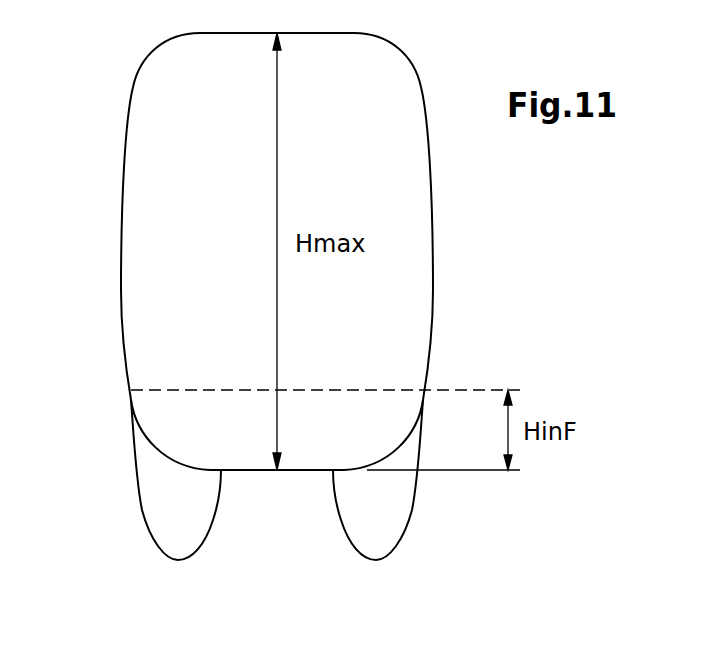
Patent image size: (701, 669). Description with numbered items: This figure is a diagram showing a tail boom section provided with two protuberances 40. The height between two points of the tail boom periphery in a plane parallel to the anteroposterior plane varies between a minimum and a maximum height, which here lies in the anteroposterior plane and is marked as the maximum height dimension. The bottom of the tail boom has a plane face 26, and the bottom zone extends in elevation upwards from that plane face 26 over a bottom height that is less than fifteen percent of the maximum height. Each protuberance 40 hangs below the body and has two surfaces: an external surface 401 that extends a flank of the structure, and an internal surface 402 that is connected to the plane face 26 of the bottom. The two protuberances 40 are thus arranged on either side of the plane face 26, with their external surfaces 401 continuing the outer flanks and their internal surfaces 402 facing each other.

The plane face 26 is at (317, 473).
The protuberance 40 is at (274, 511).
The external surface 401 is at (138, 492).
The internal surface 402 is at (220, 510).